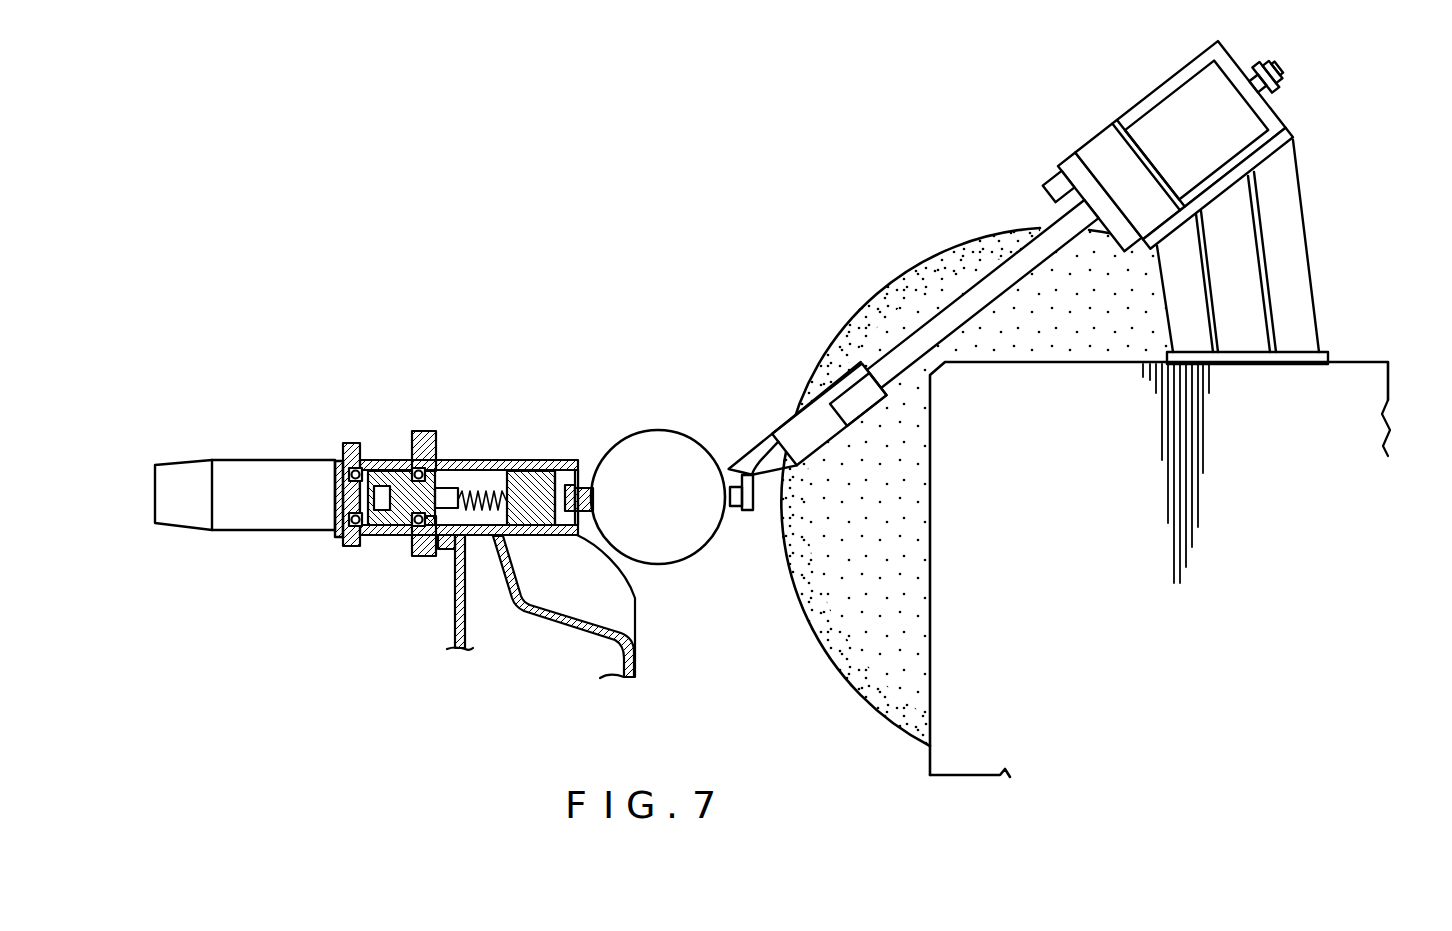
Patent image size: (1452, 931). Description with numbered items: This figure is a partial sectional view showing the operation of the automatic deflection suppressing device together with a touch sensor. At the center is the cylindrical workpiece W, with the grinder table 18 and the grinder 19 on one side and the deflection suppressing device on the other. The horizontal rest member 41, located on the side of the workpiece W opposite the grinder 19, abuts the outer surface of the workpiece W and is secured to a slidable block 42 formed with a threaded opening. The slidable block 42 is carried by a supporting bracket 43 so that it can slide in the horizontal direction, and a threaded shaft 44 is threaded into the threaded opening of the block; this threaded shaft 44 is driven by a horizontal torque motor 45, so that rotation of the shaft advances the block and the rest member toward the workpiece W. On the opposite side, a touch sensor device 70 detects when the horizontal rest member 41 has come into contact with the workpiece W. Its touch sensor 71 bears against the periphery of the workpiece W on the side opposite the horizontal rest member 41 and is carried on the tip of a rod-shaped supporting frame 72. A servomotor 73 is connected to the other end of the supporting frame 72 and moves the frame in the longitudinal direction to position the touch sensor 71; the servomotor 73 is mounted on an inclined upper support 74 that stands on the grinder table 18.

The grinder table 18 is at (1358, 362).
The grinder 19 is at (929, 272).
The horizontal rest member 41 is at (592, 488).
The slidable block 42 is at (521, 468).
The supporting bracket 43 is at (454, 615).
The threaded shaft 44 is at (455, 579).
The horizontal torque motor 45 is at (281, 531).
The touch sensor device 70 is at (1012, 278).
The touch sensor 71 is at (747, 512).
The supporting frame 72 is at (900, 345).
The servomotor 73 is at (1188, 141).
The inclined upper support 74 is at (1297, 244).
The cylindrical workpiece W is at (653, 431).